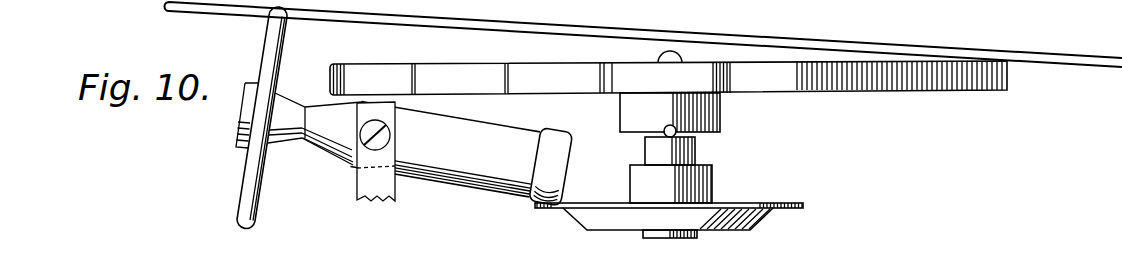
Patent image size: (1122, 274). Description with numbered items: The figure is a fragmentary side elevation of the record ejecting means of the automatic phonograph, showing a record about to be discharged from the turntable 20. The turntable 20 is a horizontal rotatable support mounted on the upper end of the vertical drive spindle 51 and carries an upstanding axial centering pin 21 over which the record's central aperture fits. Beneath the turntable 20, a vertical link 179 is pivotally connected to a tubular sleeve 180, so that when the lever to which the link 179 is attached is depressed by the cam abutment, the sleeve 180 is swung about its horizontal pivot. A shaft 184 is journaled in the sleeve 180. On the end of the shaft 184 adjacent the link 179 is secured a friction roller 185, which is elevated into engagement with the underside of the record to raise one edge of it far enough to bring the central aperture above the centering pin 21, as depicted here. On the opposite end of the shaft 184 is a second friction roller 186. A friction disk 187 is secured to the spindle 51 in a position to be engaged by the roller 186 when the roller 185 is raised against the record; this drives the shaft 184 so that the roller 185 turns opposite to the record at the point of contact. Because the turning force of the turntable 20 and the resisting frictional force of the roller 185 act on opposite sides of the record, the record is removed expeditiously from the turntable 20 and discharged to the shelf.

The turntable 20 is at (605, 90).
The centering pin 21 is at (658, 52).
The vertical drive spindle 51 is at (653, 148).
The vertical link 179 is at (373, 197).
The tubular sleeve 180 is at (492, 128).
The shaft 184 is at (322, 150).
The friction roller 185 is at (250, 178).
The friction roller 186 is at (563, 160).
The friction disk 187 is at (790, 185).